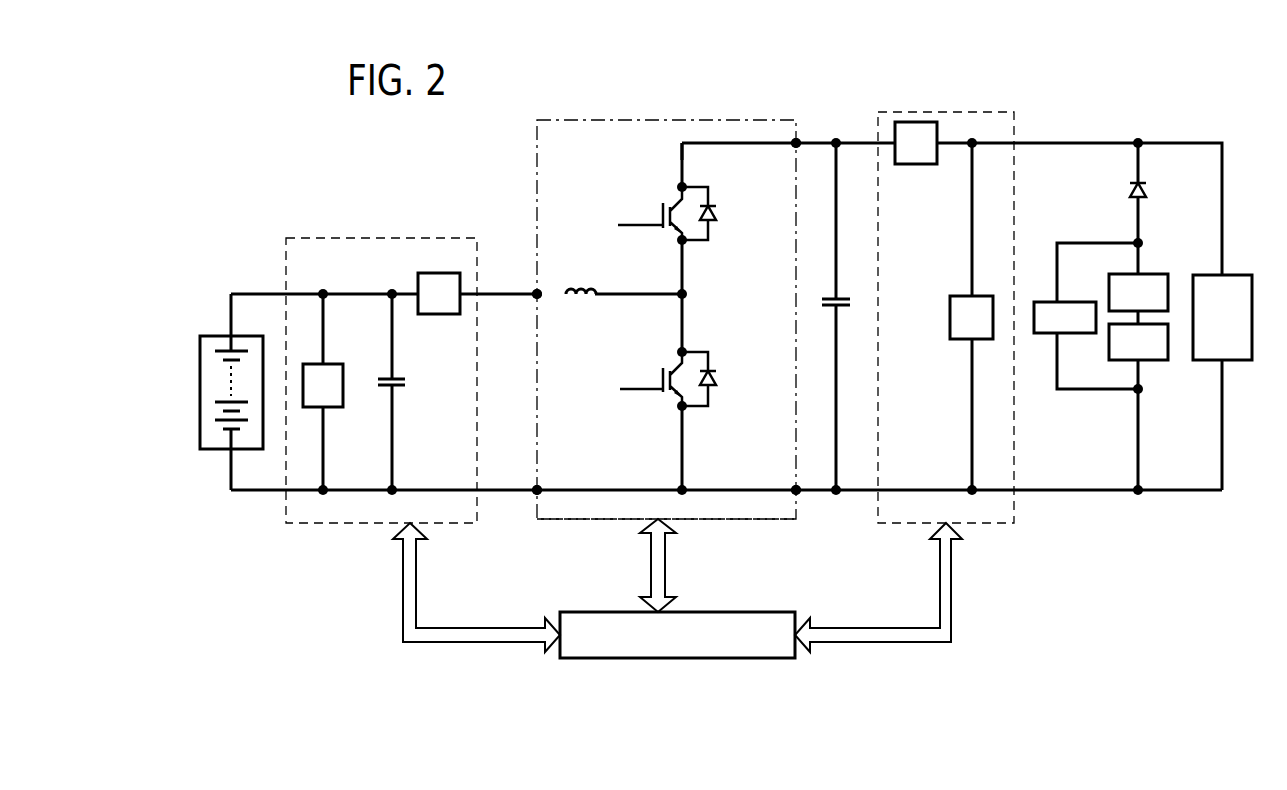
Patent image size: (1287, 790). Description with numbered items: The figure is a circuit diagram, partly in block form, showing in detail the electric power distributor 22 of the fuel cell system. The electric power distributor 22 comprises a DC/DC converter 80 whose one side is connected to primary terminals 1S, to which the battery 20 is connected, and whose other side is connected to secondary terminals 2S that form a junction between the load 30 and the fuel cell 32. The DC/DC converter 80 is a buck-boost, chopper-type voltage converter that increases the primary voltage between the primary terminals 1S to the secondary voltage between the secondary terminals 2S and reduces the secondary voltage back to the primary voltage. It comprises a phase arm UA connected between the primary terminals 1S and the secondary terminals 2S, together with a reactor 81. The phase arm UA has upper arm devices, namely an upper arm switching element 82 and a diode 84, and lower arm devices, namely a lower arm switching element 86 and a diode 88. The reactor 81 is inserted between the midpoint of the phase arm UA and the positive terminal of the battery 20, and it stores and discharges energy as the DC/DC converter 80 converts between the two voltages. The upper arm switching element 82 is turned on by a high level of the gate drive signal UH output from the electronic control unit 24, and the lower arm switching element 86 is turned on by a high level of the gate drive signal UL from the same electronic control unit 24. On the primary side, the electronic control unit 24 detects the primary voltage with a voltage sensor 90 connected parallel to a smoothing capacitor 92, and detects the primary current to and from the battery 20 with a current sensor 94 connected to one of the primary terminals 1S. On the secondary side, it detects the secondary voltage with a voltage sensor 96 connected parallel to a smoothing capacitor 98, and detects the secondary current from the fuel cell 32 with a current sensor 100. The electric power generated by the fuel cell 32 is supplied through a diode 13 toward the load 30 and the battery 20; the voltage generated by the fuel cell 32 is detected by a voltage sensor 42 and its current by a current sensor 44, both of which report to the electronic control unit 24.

The battery 20 is at (218, 336).
The voltage sensor 90 is at (324, 364).
The smoothing capacitor 92 is at (383, 383).
The current sensor 94 is at (452, 315).
The electric power distributor 22 is at (596, 113).
The phase arm UA is at (687, 133).
The reactor 81 is at (586, 283).
The upper arm switching element 82 is at (674, 200).
The diode 84 is at (714, 216).
The lower arm switching element 86 is at (674, 365).
The diode 88 is at (714, 381).
The primary terminals 1S is at (534, 290).
The secondary terminals 2S is at (798, 140).
The smoothing capacitor 98 is at (850, 305).
The current sensor 100 is at (925, 165).
The voltage sensor 96 is at (976, 296).
The diode 13 is at (1147, 190).
The voltage sensor 42 is at (1077, 301).
The current sensor 44 is at (1154, 273).
The fuel cell 32 is at (1158, 361).
The load 30 is at (1243, 274).
The DC/DC converter 80 is at (735, 521).
The electronic control unit 24 is at (725, 611).